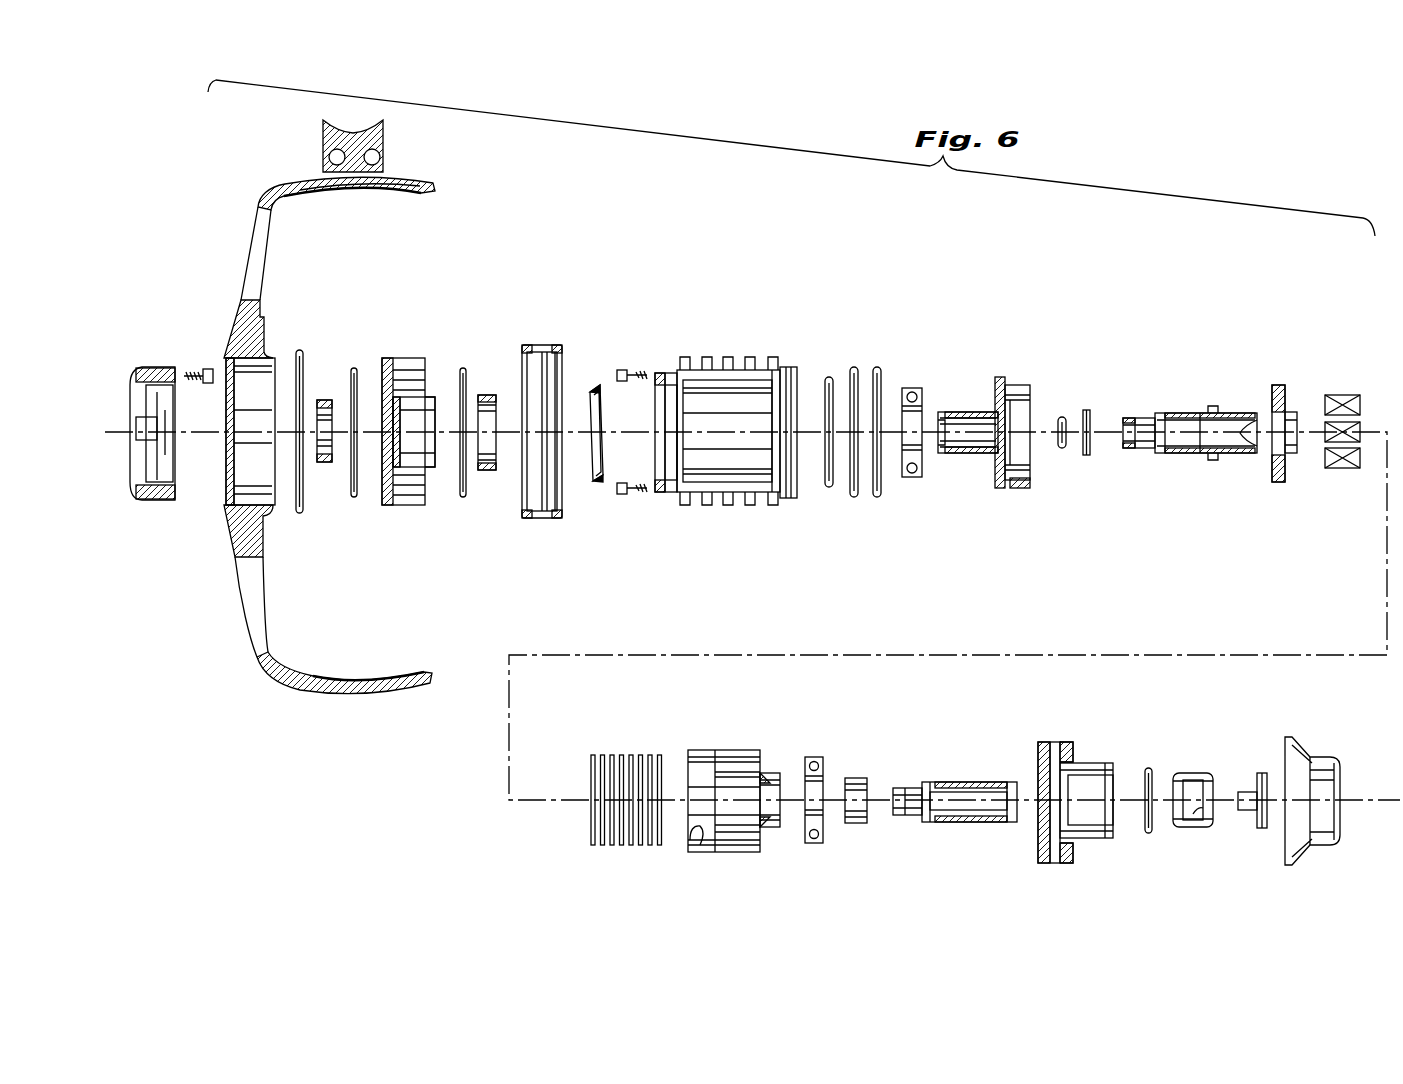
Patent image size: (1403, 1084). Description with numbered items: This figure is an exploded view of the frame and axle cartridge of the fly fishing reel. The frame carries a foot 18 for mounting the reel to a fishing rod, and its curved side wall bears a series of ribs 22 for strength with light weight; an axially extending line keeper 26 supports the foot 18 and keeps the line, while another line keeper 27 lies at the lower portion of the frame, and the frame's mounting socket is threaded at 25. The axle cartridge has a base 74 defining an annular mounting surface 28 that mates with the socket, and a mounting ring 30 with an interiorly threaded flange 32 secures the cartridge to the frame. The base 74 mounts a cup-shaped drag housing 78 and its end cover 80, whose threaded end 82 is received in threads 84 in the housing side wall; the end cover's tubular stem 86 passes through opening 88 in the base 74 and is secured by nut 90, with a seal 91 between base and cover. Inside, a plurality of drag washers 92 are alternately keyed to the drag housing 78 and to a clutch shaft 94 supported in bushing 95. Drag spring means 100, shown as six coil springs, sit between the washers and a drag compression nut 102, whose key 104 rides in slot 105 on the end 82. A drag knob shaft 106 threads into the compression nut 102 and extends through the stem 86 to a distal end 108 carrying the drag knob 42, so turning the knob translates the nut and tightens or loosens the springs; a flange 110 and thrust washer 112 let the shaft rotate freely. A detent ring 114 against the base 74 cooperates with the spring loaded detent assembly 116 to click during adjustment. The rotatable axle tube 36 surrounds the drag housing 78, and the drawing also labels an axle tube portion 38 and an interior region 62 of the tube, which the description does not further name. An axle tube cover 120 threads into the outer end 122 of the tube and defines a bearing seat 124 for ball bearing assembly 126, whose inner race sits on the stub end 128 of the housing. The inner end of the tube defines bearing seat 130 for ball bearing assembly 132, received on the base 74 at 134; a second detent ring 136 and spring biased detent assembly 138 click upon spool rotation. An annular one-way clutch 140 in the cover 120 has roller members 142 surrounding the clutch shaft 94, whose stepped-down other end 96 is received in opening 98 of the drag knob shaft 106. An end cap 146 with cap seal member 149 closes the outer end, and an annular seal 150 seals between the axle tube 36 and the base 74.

The foot 18 is at (385, 137).
The ribs 22 is at (310, 456).
The threads 25 is at (266, 352).
The line keeper 26 is at (372, 192).
The line keeper 27 is at (310, 690).
The annular mounting surface 28 is at (393, 506).
The mounting ring 30 is at (527, 426).
The interiorly threaded flange 32 is at (534, 494).
The axle tube 36 is at (738, 422).
The body flange 38 is at (683, 360).
The drag knob 42 is at (146, 368).
The bore 62 is at (742, 476).
The base 74 is at (413, 415).
The cup-shaped drag housing 78 is at (738, 796).
The end cover 80 is at (1005, 427).
The threaded end 82 is at (1028, 385).
The threads 84 is at (690, 833).
The tubular stem 86 is at (968, 455).
The opening 88 is at (436, 450).
The nut 90 is at (322, 400).
The seal 91 is at (487, 395).
The drag washers 92 is at (612, 755).
The clutch shaft 94 is at (955, 796).
The bushing 95 is at (854, 777).
The other end 96 is at (903, 816).
The opening 98 is at (1254, 413).
The drag spring means 100 is at (1338, 469).
The drag compression nut 102 is at (1303, 446).
The key 104 is at (1278, 473).
The slot 105 is at (1031, 482).
The drag knob shaft 106 is at (1193, 444).
The distal end 108 is at (1131, 449).
The flange 110 is at (1213, 406).
The thrust washer 112 is at (1086, 410).
The detent ring 114 is at (353, 497).
The spring loaded detent assembly 116 is at (201, 369).
The axle tube cover 120 is at (1056, 795).
The outer end 122 is at (788, 498).
The annular bearing seat 124 is at (1040, 831).
The ball bearing assembly 126 is at (815, 757).
The stub end 128 is at (771, 824).
The bearing seat 130 is at (658, 405).
The ball bearing assembly 132 is at (913, 388).
The base bearing surface 134 is at (431, 396).
The second detent ring 136 is at (463, 368).
The spring biased detent assembly 138 is at (628, 494).
The one-way clutch 140 is at (1205, 795).
The one-way roller members 142 is at (1205, 809).
The end cap 146 is at (1311, 758).
The cap seal member 149 is at (1259, 773).
The annular seal 150 is at (596, 385).